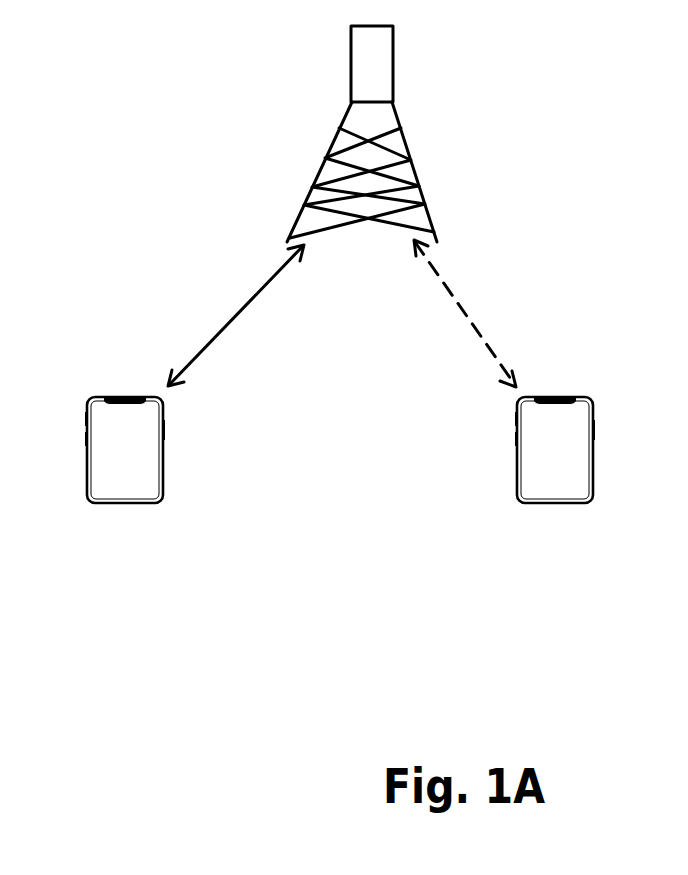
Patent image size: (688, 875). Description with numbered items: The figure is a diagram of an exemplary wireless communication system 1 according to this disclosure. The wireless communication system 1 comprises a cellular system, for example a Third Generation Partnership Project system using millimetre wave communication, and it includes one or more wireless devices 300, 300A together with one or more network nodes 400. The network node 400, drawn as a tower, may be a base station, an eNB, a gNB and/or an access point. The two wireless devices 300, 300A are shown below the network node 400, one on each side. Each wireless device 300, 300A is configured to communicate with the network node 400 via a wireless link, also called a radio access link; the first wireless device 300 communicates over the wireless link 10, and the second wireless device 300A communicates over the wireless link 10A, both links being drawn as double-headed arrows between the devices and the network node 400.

The wireless communication system 1 is at (168, 84).
The network node 400 is at (420, 186).
The wireless link 10 is at (217, 332).
The wireless link 10A is at (470, 317).
The wireless device 300 is at (125, 450).
The wireless device 300A is at (555, 450).